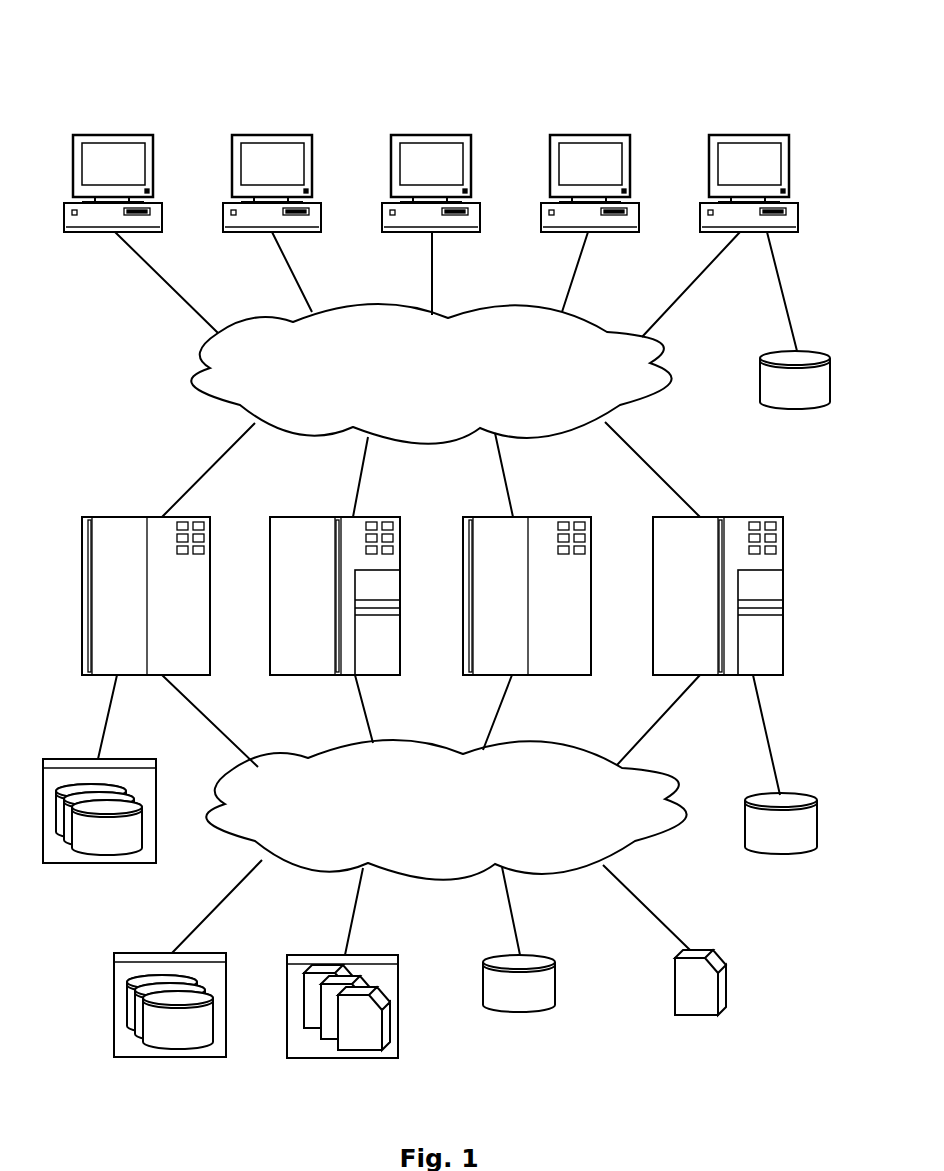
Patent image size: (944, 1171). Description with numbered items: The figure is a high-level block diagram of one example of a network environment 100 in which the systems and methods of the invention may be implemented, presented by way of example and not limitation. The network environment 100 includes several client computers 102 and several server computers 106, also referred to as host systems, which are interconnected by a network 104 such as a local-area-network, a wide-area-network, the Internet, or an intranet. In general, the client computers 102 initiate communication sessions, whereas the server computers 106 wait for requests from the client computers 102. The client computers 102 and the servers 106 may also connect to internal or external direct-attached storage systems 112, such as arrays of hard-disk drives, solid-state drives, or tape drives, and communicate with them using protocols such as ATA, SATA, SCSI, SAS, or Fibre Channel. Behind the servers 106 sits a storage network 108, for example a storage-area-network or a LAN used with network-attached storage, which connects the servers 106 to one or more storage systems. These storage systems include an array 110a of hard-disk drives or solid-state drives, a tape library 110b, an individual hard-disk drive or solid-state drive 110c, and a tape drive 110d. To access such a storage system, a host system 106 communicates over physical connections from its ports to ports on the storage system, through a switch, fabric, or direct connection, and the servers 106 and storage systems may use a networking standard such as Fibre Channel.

The network environment 100 is at (180, 69).
The client computer 102 is at (763, 171).
The network 104 is at (560, 388).
The server computer 106 is at (703, 601).
The storage network 108 is at (543, 823).
The array of hard-disk drives or solid-state drives 110a is at (170, 1057).
The tape library 110b is at (345, 1058).
The individual hard-disk drive or solid-state drive 110c is at (520, 1009).
The tape drive 110d is at (697, 1016).
The direct-attached storage system 112 is at (797, 406).